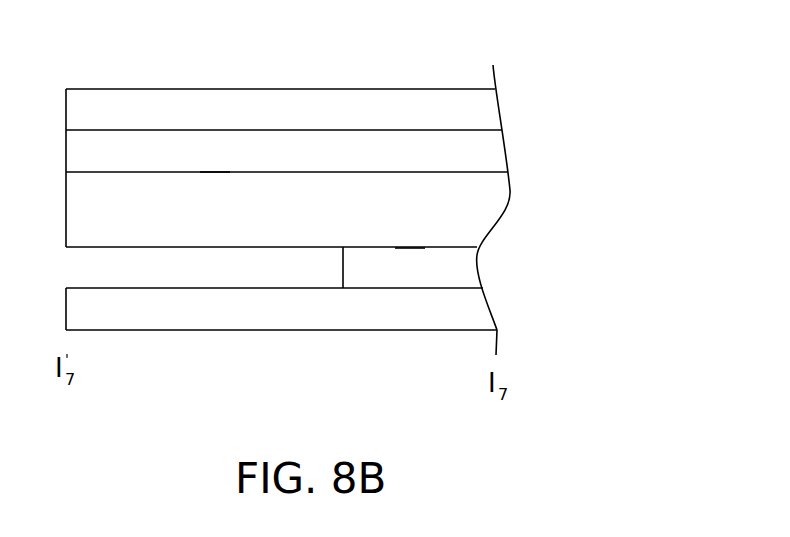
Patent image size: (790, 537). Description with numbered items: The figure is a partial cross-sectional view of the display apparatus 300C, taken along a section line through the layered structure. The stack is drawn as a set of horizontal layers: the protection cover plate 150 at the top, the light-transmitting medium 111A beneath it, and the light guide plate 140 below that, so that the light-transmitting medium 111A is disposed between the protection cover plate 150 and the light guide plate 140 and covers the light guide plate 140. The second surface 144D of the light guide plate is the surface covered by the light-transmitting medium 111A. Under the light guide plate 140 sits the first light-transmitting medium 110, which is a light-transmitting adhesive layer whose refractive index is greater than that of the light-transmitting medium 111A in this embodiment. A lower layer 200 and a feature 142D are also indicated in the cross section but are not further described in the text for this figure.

The protection cover plate 150 is at (485, 110).
The light-transmitting medium 111A is at (485, 152).
The light guide plate 140 is at (485, 217).
The first light-transmitting medium 110 is at (465, 267).
The base substrate 200 is at (472, 308).
The second surface 144D is at (214, 172).
The conductive pad 142D is at (409, 248).
The display apparatus 300C is at (617, 451).